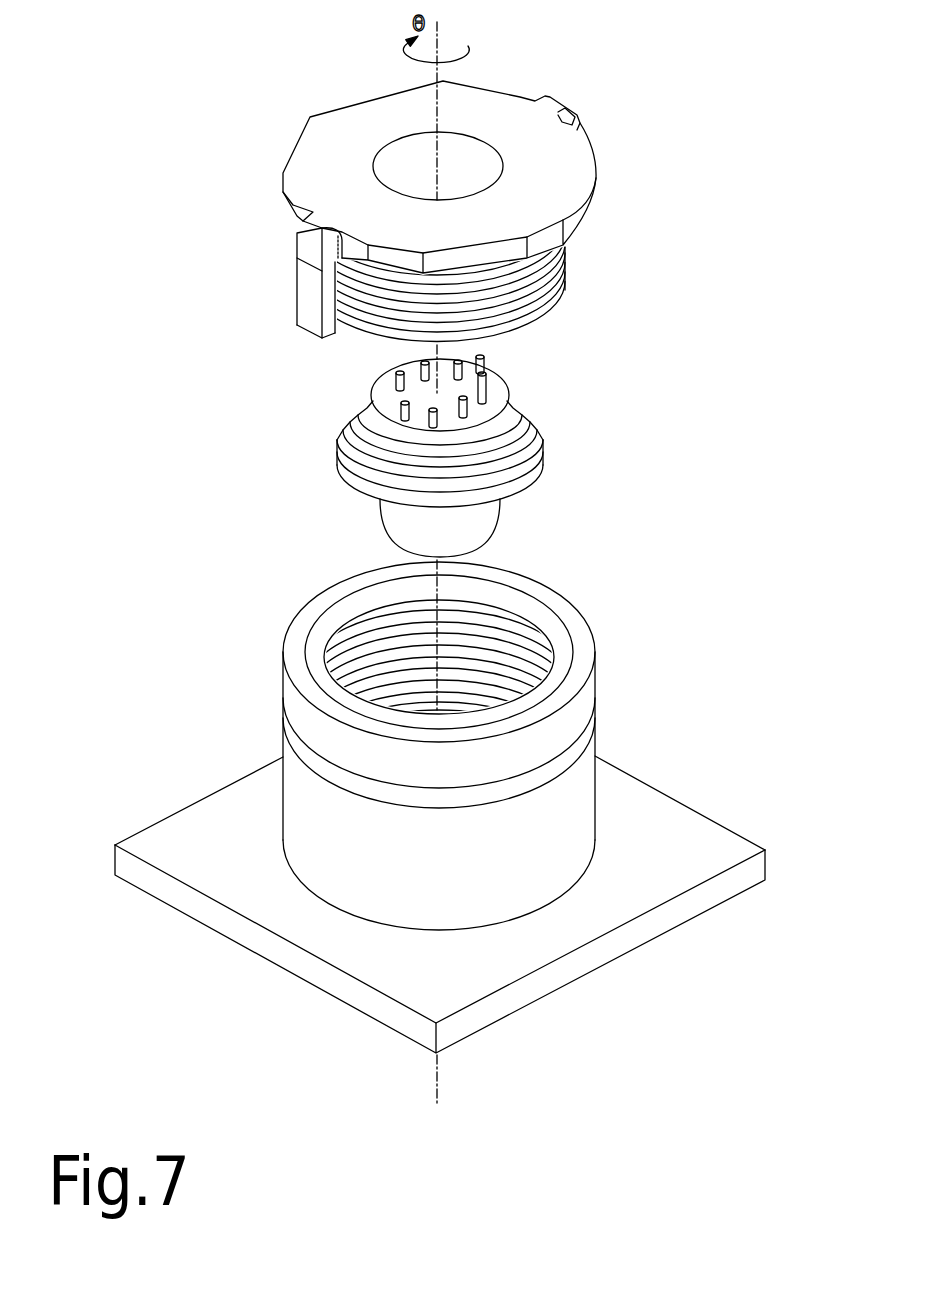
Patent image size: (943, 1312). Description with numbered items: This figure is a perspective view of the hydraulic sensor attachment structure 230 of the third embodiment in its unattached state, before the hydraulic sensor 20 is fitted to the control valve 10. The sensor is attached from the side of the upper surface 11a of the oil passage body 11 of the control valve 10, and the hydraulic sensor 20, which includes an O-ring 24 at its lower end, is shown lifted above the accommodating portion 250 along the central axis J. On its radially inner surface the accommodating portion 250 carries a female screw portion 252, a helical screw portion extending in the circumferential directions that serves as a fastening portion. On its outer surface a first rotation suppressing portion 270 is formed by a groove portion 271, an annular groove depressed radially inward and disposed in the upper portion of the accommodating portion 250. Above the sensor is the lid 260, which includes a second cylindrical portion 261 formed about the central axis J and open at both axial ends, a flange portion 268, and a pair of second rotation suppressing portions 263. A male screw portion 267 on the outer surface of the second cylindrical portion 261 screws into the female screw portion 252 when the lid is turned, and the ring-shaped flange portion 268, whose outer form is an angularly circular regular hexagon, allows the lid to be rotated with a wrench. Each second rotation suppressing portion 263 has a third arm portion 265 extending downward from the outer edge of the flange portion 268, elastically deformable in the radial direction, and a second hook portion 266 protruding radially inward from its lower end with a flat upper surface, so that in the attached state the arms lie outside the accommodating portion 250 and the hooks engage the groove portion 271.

The control valve 10 is at (752, 808).
The oil passage body 11 is at (149, 852).
The upper surface 11a is at (712, 864).
The hydraulic sensor 20 is at (560, 405).
The O-ring 24 is at (492, 522).
The hydraulic sensor attachment structure 230 is at (708, 230).
The accommodating portion 250 is at (598, 600).
The female screw portion 252 is at (515, 643).
The lid 260 is at (594, 139).
The second cylindrical portion 261 is at (563, 267).
The second rotation suppressing portion 263 is at (575, 102).
The third arm portion 265 is at (285, 307).
The second hook portion 266 is at (341, 312).
The male screw portion 267 is at (517, 297).
The flange portion 268 is at (286, 181).
The first rotation suppressing portion 270 is at (514, 794).
The groove portion 271 is at (482, 867).
The central axis J is at (438, 38).